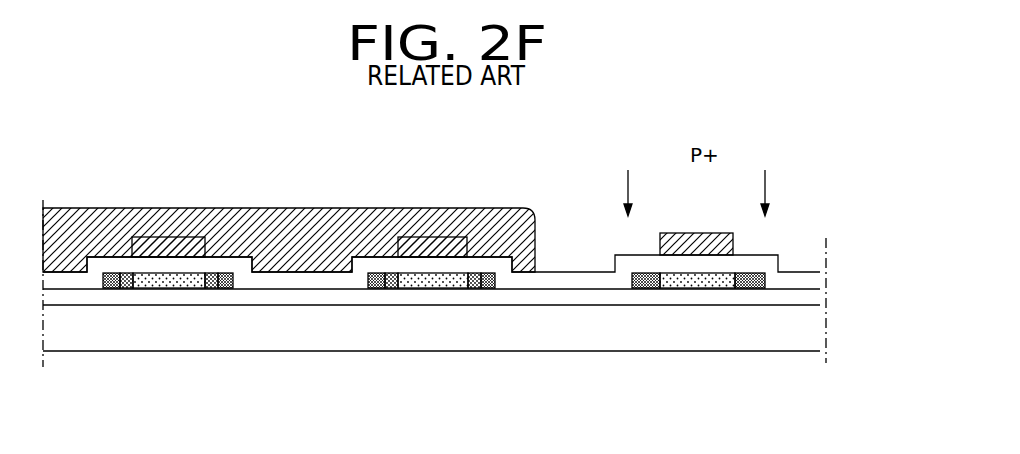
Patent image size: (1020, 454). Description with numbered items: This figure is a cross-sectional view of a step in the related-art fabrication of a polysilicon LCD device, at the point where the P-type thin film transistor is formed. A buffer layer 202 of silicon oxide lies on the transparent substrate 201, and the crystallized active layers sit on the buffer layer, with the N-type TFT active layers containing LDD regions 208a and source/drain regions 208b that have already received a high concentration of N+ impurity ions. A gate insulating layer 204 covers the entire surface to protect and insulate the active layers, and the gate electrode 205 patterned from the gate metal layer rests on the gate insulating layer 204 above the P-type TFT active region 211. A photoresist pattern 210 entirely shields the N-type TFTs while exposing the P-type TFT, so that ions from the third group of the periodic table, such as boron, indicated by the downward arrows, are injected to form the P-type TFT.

The transparent substrate 201 is at (818, 332).
The buffer layer 202 is at (818, 292).
The gate insulating layer 204 is at (818, 277).
The gate electrode 205 is at (700, 240).
The LDD region 208a is at (390, 290).
The source/drain regions 208b is at (377, 290).
The photoresist pattern 210 is at (273, 218).
The active layer of PMOS region 211 is at (645, 290).